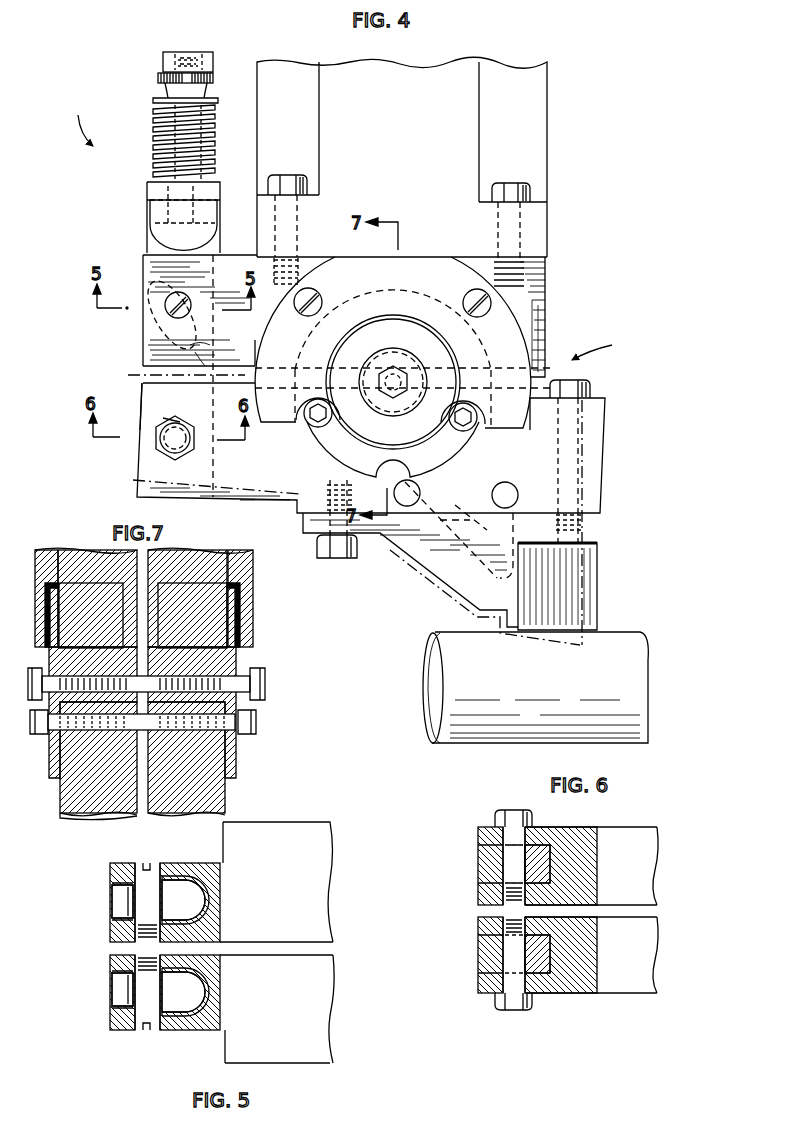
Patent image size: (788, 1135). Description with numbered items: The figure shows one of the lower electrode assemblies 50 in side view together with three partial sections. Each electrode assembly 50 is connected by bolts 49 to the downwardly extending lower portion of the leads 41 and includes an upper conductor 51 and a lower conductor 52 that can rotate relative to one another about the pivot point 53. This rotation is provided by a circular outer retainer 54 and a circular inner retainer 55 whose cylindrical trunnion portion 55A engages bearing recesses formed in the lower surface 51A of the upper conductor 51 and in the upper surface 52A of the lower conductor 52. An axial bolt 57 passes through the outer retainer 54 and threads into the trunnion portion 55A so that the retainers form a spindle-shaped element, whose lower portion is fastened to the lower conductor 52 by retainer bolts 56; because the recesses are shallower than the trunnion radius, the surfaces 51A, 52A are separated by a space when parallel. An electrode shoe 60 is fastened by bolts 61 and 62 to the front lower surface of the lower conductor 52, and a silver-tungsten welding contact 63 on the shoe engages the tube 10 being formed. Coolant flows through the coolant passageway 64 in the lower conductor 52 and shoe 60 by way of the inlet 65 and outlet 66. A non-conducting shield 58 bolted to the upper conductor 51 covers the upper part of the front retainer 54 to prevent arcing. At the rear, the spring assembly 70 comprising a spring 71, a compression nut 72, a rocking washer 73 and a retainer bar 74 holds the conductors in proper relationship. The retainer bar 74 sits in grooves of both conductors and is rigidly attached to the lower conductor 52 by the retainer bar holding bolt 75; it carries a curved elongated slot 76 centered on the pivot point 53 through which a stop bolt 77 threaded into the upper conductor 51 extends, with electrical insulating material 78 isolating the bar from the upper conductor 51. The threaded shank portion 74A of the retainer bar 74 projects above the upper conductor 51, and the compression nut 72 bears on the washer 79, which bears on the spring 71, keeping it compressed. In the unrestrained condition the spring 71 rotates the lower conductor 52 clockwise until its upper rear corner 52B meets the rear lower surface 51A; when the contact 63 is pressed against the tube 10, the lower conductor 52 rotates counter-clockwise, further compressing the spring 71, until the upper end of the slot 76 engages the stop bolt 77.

In FIG. 4, the tube 10 is at (640, 712).
In FIG. 4, the leads 41 is at (445, 70).
In FIG. 4, the bolts 49 is at (287, 182).
In FIG. 4, the electrode assembly 50 is at (598, 342).
In FIG. 4, the upper conductor 51 is at (535, 288).
In FIG. 7, the upper conductor 51 is at (88, 565).
In FIG. 5, the upper conductor 51 is at (205, 872).
In FIG. 4, the lower surface of upper conductor 51A is at (203, 362).
In FIG. 4, the lower conductor 52 is at (590, 460).
In FIG. 7, the lower conductor 52 is at (80, 792).
In FIG. 6, the lower conductor 52 is at (583, 842).
In FIG. 4, the upper surface of lower conductor 52A is at (257, 358).
In FIG. 4, the upper rear corner of lower conductor 52B is at (142, 387).
In FIG. 4, the pivot point 53 is at (395, 380).
In FIG. 4, the outer retainer 54 is at (332, 438).
In FIG. 7, the outer retainer 54 is at (50, 660).
In FIG. 7, the inner retainer 55 is at (122, 600).
In FIG. 4, the trunnion portion 55A is at (320, 315).
In FIG. 7, the trunnion portion 55A is at (60, 640).
In FIG. 4, the retainer bolts 56 is at (313, 416).
In FIG. 7, the retainer bolts 56 is at (40, 735).
In FIG. 4, the axial bolt 57 is at (410, 373).
In FIG. 7, the axial bolt 57 is at (30, 683).
In FIG. 4, the shield 58 is at (513, 347).
In FIG. 7, the shield 58 is at (42, 565).
In FIG. 4, the electrode shoe 60 is at (432, 548).
In FIG. 7, the electrode shoe 60 is at (68, 820).
In FIG. 4, the bolt 61 is at (318, 548).
In FIG. 4, the bolt 62 is at (575, 385).
In FIG. 4, the welding contact 63 is at (590, 620).
In FIG. 4, the coolant passageway 64 is at (459, 530).
In FIG. 4, the coolant passageway inlet 65 is at (412, 492).
In FIG. 4, the coolant passageway outlet 66 is at (510, 490).
In FIG. 4, the spring assembly 70 is at (78, 119).
In FIG. 4, the spring 71 is at (156, 128).
In FIG. 4, the compression nut 72 is at (205, 64).
In FIG. 4, the rocking washer 73 is at (160, 215).
In FIG. 4, the retainer bar 74 is at (150, 378).
In FIG. 5, the retainer bar 74 is at (110, 898).
In FIG. 6, the retainer bar 74 is at (480, 863).
In FIG. 4, the threaded shank portion 74A is at (185, 52).
In FIG. 4, the retainer bar holding bolt 75 is at (183, 452).
In FIG. 6, the retainer bar holding bolt 75 is at (512, 822).
In FIG. 4, the slot 76 is at (152, 330).
In FIG. 4, the stop bolt 77 is at (179, 300).
In FIG. 5, the stop bolt 77 is at (143, 880).
In FIG. 5, the electrical insulating material 78 is at (170, 878).
In FIG. 4, the washer 79 is at (165, 88).